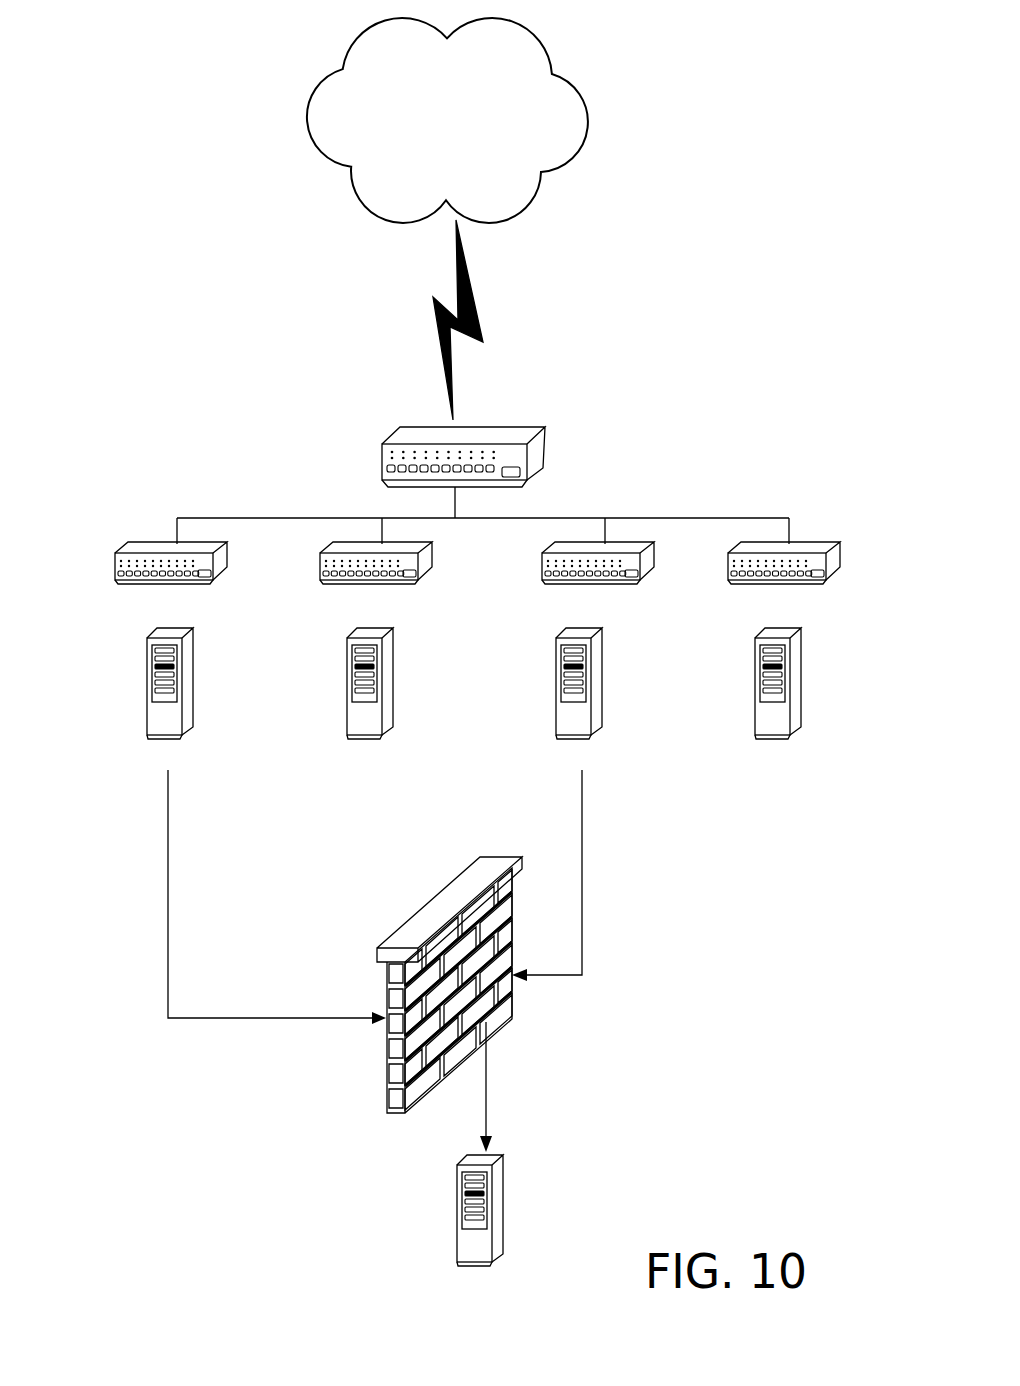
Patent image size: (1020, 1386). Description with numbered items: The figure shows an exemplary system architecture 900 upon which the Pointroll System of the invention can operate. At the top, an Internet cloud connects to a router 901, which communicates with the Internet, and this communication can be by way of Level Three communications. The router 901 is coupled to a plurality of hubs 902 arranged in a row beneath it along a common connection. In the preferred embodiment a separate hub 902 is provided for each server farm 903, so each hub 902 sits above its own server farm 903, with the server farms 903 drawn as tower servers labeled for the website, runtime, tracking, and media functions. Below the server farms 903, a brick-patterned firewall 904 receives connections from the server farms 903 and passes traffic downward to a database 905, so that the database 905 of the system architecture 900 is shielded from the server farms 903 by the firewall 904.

The system architecture 900 is at (652, 78).
The router 901 is at (497, 427).
The hub 902 is at (123, 548).
The server farm 903 is at (147, 707).
The firewall 904 is at (493, 1020).
The database 905 is at (505, 1212).